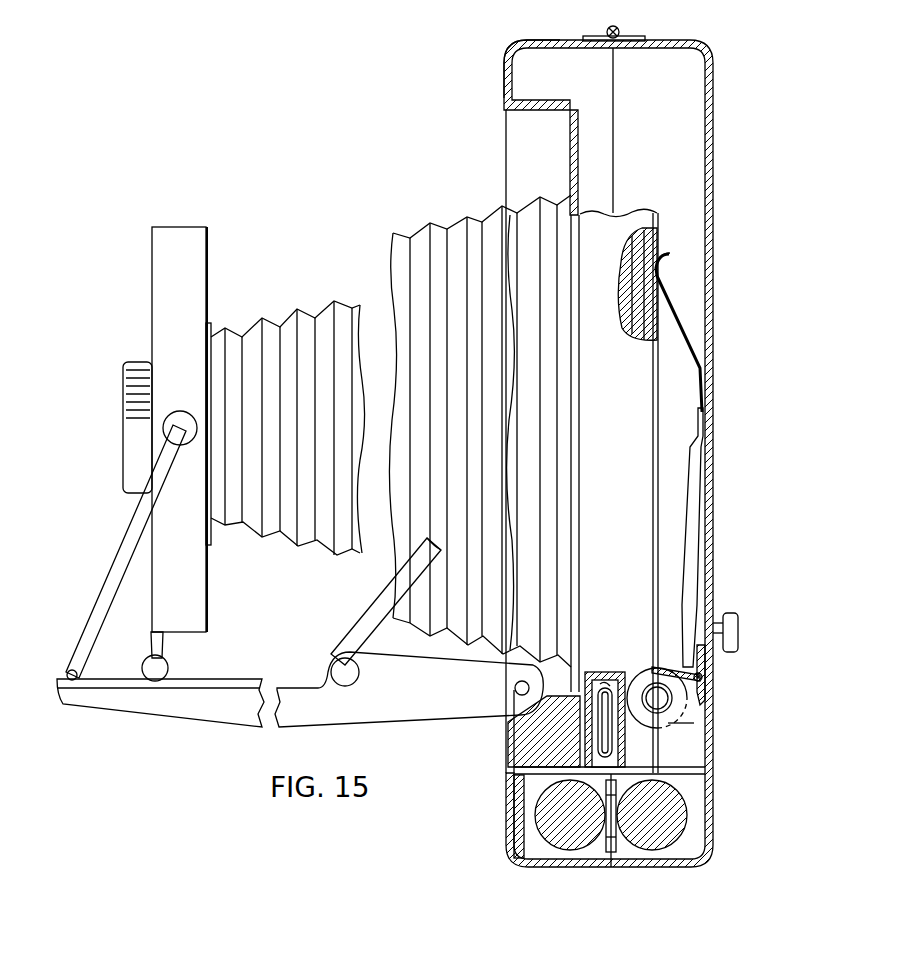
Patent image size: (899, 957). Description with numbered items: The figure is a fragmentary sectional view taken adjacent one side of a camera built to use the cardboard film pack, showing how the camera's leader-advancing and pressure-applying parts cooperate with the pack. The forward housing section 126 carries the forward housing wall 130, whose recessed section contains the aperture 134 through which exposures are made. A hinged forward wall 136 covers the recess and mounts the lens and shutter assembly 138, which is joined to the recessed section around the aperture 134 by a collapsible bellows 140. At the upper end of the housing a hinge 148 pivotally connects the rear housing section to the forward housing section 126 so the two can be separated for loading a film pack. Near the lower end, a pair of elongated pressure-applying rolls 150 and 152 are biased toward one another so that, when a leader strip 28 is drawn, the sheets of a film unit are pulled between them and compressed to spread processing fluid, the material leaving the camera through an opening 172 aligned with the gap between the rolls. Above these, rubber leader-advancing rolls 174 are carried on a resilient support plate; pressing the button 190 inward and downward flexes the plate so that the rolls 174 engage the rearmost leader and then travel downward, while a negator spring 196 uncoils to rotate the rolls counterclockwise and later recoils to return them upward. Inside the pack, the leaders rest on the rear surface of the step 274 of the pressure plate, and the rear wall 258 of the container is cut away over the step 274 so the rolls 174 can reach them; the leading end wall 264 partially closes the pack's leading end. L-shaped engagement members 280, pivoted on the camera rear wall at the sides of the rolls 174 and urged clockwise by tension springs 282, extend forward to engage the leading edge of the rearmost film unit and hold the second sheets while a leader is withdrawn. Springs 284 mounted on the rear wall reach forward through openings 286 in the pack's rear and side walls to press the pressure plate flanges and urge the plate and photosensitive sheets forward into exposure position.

The leader strip 28 is at (722, 183).
The forward housing section 126 is at (499, 86).
The forward housing wall 130 is at (515, 808).
The aperture 134 is at (578, 216).
The hinged forward wall 136 is at (403, 722).
The lens and shutter assembly 138 is at (196, 226).
The collapsible bellows 140 is at (392, 277).
The hinge 148 is at (622, 32).
The pressure-applying roll 150 is at (668, 850).
The pressure-applying roll 152 is at (578, 852).
The opening 172 is at (612, 868).
The leader advancing rolls 174 is at (672, 722).
The button 190 is at (739, 629).
The negator spring 196 is at (700, 597).
The rear wall 258 is at (660, 230).
The leading end wall 264 is at (513, 766).
The step 274 is at (626, 746).
The L-shaped engagement member 280 is at (713, 660).
The tension spring 282 is at (706, 684).
The spring 284 is at (680, 322).
The opening 286 is at (671, 255).